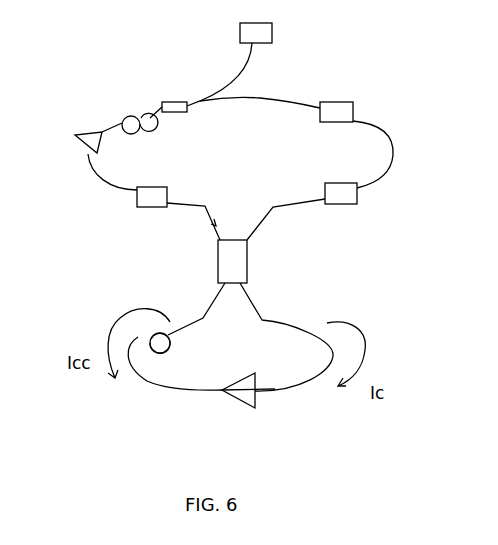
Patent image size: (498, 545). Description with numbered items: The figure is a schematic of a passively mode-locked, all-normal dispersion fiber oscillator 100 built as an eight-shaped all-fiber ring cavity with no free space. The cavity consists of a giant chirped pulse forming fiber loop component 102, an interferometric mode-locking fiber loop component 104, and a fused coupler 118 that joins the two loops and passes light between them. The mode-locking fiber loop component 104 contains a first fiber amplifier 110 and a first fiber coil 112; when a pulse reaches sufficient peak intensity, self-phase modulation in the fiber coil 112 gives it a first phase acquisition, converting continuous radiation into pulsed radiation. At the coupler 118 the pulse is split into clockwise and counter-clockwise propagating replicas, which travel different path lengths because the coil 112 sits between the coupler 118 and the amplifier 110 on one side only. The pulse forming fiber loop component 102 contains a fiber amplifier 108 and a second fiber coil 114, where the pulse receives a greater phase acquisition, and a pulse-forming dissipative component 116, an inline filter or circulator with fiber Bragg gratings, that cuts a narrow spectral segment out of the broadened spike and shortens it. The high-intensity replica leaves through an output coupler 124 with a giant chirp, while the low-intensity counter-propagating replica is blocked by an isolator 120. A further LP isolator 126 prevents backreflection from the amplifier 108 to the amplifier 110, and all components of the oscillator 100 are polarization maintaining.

The all-normal dispersion fiber oscillator 100 is at (269, 82).
The giant chirped pulse forming fiber loop component 102 is at (262, 157).
The interferometric mode-locking fiber loop component 104 is at (253, 355).
The fiber amplifier 108 is at (100, 134).
The first fiber amplifier 110 is at (243, 398).
The first fiber coil 112 is at (160, 345).
The second fiber coil 114 is at (128, 127).
The pulse-forming dissipative component 116 is at (333, 193).
The fused coupler 118 is at (242, 250).
The isolator 120 is at (358, 90).
The output coupler 124 is at (170, 103).
The LP isolator 126 is at (142, 198).